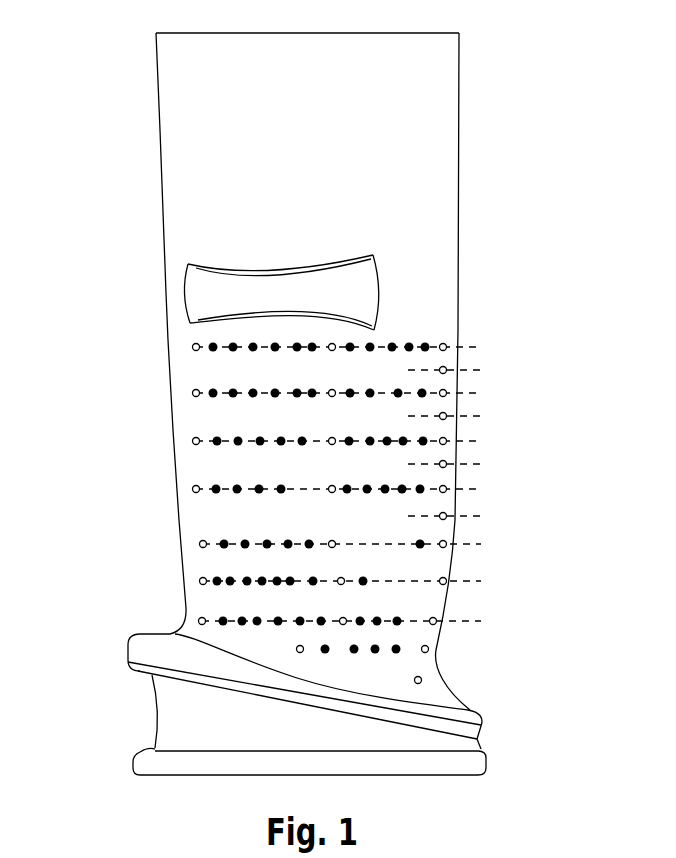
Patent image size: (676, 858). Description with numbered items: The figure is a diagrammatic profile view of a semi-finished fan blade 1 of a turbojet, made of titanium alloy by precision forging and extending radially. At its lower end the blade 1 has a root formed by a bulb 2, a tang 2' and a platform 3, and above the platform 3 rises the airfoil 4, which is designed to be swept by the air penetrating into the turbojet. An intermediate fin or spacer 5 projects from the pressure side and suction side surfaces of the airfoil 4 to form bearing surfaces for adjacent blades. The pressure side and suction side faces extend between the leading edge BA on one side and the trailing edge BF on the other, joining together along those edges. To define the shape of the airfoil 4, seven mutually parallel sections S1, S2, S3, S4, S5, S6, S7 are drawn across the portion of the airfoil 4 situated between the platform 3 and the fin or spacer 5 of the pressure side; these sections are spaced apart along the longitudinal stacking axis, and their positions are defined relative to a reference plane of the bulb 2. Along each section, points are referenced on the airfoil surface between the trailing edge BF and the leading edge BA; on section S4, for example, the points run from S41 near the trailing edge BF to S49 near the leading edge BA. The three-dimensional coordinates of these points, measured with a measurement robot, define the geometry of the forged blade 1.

The fan blade 1 is at (500, 156).
The bulb 2 is at (271, 762).
The tang 2' is at (282, 712).
The platform 3 is at (149, 650).
The airfoil 4 is at (197, 130).
The intermediate fin or spacer 5 is at (198, 294).
The trailing edge BF is at (156, 63).
The leading edge BA is at (459, 72).
The first section S1 is at (358, 645).
The second section S2 is at (358, 581).
The third section S3 is at (358, 544).
The fourth section S4 is at (304, 489).
The fifth section S5 is at (355, 435).
The sixth section S6 is at (355, 388).
The seventh section S7 is at (355, 347).
The first point of section S4 S41 is at (217, 487).
The ninth point of section S4 S49 is at (421, 492).